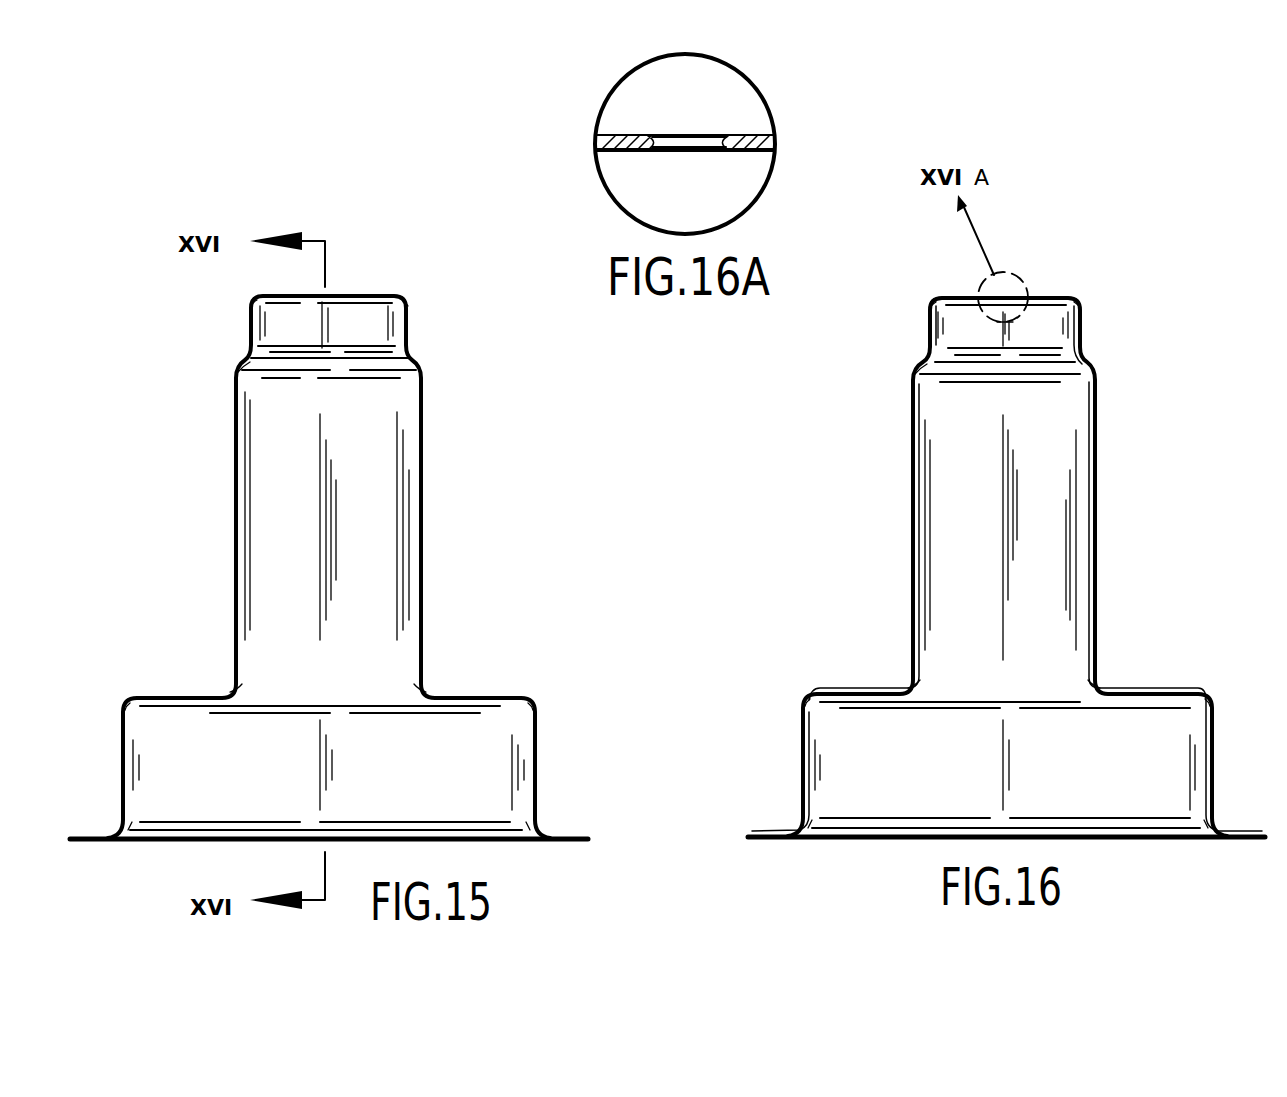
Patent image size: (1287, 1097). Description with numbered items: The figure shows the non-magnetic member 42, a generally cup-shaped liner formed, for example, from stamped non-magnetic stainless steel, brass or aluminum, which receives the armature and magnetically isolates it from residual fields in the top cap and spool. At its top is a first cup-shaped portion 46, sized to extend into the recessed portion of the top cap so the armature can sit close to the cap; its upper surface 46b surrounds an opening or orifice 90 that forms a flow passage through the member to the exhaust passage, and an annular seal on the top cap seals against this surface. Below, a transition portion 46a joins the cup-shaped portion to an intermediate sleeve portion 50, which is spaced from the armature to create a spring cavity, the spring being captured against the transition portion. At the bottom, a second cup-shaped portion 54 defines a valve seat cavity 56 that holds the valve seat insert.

In FIG. 15, the non-magnetic member 42 is at (457, 466).
In FIG. 16, the non-magnetic member 42 is at (1190, 532).
In FIG. 15, the first cup-shaped portion 46 is at (407, 333).
In FIG. 16, the first cup-shaped portion 46 is at (1082, 333).
In FIG. 16A, the first cup-shaped portion 46 is at (745, 140).
In FIG. 15, the transition portion 46a is at (412, 362).
In FIG. 16, the transition portion 46a is at (1092, 362).
In FIG. 15, the upper surface 46b is at (367, 296).
In FIG. 16, the upper surface 46b is at (1046, 298).
In FIG. 15, the intermediate sleeve portion 50 is at (423, 566).
In FIG. 16, the intermediate sleeve portion 50 is at (1097, 516).
In FIG. 15, the second cup-shaped portion 54 is at (536, 752).
In FIG. 16, the second cup-shaped portion 54 is at (1214, 745).
In FIG. 15, the valve seat cavity 56 is at (475, 778).
In FIG. 16, the valve seat cavity 56 is at (1110, 740).
In FIG. 16, the opening or orifice 90 is at (1003, 298).
In FIG. 16A, the opening or orifice 90 is at (680, 135).